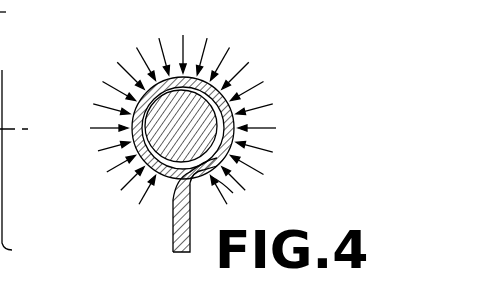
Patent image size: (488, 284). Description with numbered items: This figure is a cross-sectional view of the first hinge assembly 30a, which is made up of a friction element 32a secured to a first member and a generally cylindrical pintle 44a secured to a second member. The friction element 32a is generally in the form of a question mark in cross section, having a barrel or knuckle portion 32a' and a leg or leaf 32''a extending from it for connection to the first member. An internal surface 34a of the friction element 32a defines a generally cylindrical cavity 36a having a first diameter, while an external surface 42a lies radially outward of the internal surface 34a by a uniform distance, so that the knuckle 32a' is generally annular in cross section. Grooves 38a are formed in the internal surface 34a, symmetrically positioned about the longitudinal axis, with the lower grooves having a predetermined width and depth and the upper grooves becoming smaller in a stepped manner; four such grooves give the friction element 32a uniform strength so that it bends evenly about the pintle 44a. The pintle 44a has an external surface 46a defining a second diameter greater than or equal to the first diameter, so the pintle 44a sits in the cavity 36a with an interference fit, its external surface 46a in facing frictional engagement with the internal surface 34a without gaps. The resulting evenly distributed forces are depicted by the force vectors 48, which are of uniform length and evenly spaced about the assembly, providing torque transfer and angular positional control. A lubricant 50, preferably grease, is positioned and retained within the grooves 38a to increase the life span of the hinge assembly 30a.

The first hinge assembly 30a is at (27, 14).
The friction element 32a is at (207, 165).
The barrel or knuckle portion 32a' is at (246, 40).
The leg or leaf 32''a is at (139, 254).
The internal surface 34a is at (228, 162).
The cylindrical cavity 36a is at (213, 100).
The grooves 38a is at (238, 136).
The external surface 42a is at (153, 73).
The pintle 44a is at (136, 106).
The external surface of the pintle 46a is at (214, 176).
The force vectors 48 is at (250, 166).
The lubricant 50 is at (233, 117).